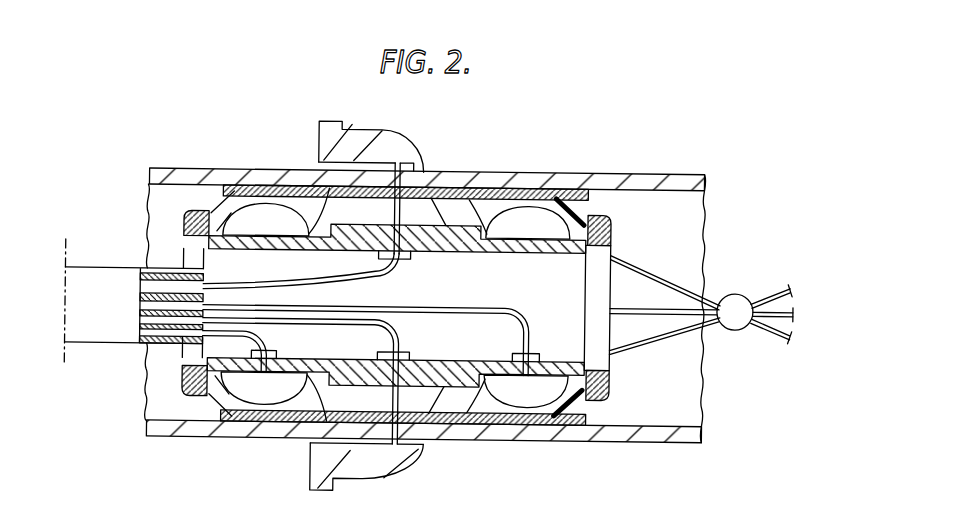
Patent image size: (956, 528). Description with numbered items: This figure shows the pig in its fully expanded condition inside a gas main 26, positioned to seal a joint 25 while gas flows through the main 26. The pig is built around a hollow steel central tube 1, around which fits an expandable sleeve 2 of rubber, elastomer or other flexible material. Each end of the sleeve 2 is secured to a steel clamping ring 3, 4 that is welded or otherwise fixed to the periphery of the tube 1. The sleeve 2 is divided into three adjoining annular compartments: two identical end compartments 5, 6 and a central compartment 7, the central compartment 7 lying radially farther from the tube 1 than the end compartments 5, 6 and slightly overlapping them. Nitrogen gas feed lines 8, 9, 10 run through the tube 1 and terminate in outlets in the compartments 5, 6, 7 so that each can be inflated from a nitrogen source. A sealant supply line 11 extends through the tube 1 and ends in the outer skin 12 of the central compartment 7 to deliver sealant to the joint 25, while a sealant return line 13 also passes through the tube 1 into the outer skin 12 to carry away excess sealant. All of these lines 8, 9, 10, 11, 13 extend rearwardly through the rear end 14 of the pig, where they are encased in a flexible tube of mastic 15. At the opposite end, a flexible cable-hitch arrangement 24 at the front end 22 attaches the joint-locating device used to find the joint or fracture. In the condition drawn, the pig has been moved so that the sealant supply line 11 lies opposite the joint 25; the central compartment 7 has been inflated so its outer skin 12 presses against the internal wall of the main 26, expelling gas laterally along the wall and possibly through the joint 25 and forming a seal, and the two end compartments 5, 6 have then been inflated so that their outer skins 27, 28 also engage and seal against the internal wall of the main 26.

The central tube 1 is at (450, 383).
The expandable sleeve 2 is at (489, 185).
The clamping ring 3 is at (598, 208).
The clamping ring 4 is at (195, 208).
The end compartment 5 is at (520, 393).
The end compartment 6 is at (237, 387).
The central compartment 7 is at (448, 197).
The nitrogen gas feed line 8 is at (531, 331).
The nitrogen gas feed line 9 is at (268, 348).
The nitrogen gas feed line 10 is at (400, 334).
The sealant supply line 11 is at (275, 276).
The outer skin 12 is at (420, 184).
The sealant return line 13 is at (400, 278).
The rear end 14 is at (175, 357).
The flexible tube of mastic 15 is at (128, 347).
The front end 22 is at (617, 249).
The flexible cable-hitch arrangement 24 is at (737, 288).
The joint 25 is at (357, 130).
The gas main 26 is at (259, 438).
The outer skin 27 is at (266, 199).
The outer skin 28 is at (541, 191).